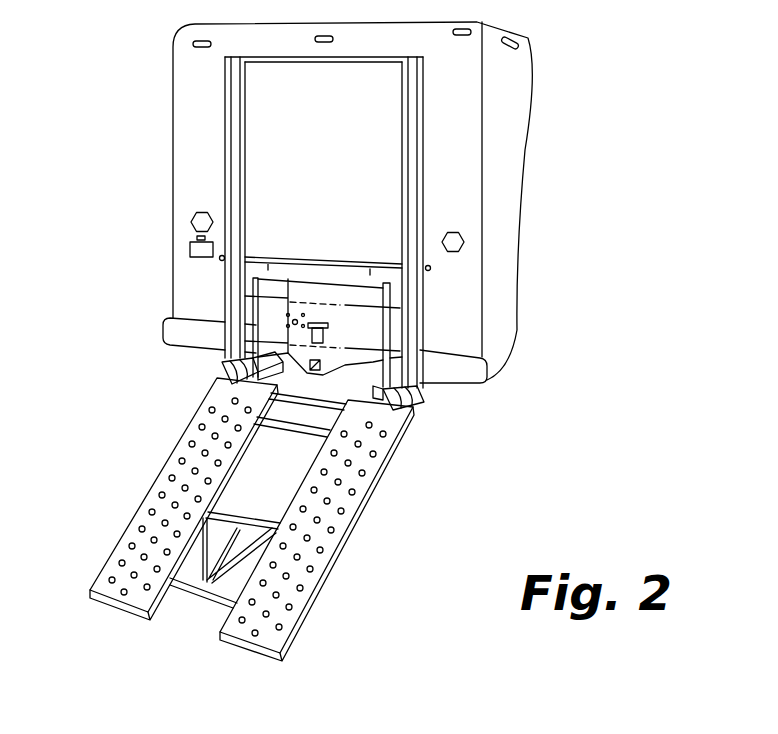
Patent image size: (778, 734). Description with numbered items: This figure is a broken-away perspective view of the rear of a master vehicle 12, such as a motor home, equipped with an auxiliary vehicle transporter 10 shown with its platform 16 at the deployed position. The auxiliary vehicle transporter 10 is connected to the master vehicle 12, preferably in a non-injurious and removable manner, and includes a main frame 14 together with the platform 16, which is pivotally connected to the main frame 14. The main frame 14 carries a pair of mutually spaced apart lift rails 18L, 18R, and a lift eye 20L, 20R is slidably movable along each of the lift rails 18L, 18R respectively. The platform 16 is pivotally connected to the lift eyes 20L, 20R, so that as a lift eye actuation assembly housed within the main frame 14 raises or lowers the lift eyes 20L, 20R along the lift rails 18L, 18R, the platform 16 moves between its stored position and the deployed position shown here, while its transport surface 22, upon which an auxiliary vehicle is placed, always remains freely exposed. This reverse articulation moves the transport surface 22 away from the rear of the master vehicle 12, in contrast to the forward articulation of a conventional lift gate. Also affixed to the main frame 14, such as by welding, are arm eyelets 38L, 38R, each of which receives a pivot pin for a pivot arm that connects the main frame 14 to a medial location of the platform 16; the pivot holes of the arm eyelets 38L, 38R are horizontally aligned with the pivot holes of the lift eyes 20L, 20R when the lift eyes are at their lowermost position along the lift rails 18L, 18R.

The auxiliary vehicle transporter 10 is at (423, 422).
The master vehicle 12 is at (517, 362).
The main frame 14 is at (432, 83).
The platform 16 is at (347, 542).
The left lift rail 18L is at (247, 164).
The right lift rail 18R is at (400, 201).
The left lift eye 20L is at (222, 361).
The right lift eye 20R is at (420, 397).
The transport surface 22 is at (292, 510).
The left arm eyelet 38L is at (253, 362).
The right arm eyelet 38R is at (388, 385).